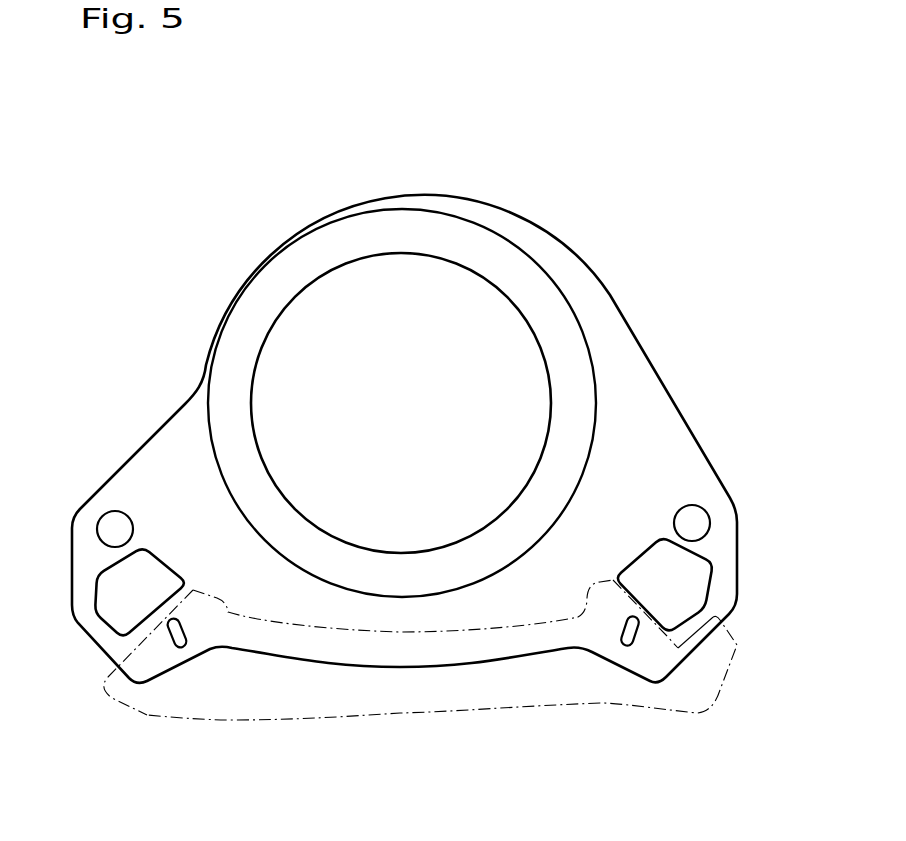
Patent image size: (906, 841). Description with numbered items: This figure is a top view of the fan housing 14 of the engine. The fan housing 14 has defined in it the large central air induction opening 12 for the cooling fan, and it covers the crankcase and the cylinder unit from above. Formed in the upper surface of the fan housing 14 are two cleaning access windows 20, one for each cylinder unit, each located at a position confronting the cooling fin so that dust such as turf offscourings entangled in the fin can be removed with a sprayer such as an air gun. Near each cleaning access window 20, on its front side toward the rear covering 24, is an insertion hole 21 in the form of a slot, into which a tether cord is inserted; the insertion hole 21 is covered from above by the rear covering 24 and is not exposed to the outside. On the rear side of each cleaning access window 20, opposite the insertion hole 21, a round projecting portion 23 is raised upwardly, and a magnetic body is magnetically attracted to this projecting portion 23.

The air induction opening 12 is at (328, 272).
The fan housing 14 is at (617, 293).
The cleaning access window 20 is at (118, 622).
The insertion hole 21 is at (180, 647).
The projecting portion 23 is at (113, 528).
The rear covering 24 is at (348, 716).